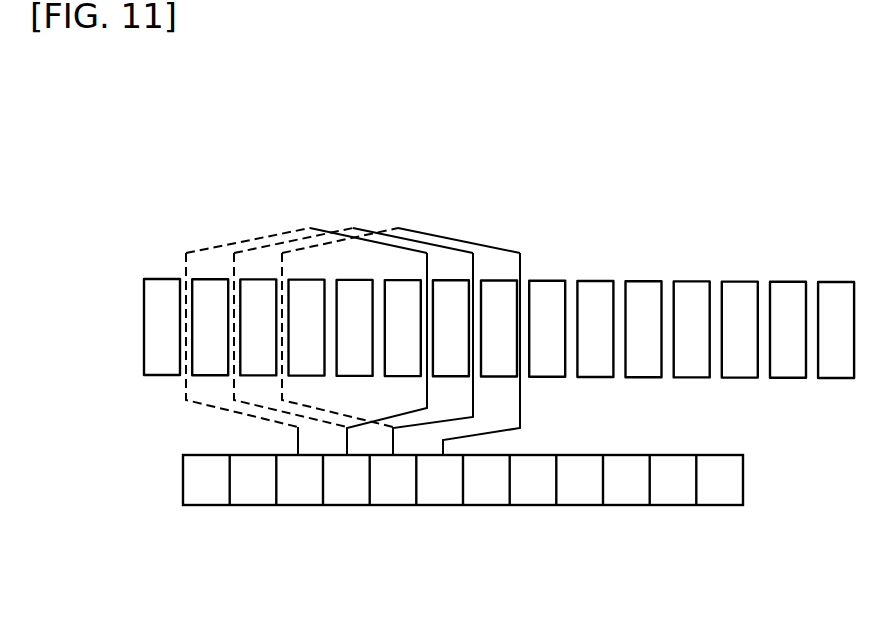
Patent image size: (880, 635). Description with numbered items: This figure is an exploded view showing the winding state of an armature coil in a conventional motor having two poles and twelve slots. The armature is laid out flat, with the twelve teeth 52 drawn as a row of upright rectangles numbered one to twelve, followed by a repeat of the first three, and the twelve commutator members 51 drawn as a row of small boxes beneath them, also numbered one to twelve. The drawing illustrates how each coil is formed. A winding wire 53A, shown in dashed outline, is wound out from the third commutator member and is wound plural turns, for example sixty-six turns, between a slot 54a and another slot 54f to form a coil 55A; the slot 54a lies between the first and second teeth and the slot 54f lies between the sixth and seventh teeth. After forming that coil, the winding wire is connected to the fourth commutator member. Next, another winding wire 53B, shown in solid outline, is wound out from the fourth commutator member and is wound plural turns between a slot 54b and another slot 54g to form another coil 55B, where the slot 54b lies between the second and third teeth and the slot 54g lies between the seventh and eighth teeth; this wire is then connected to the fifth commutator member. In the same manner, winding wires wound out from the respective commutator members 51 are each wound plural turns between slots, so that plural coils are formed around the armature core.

The commutator members 51 is at (205, 506).
The teeth 52 is at (478, 271).
The winding wire 53A is at (202, 405).
The winding wire 53B is at (333, 427).
The slot 54a is at (190, 280).
The slot 54b is at (241, 280).
The slot 54f is at (433, 280).
The slot 54g is at (482, 280).
The coil 55A is at (247, 240).
The coil 55B is at (415, 241).